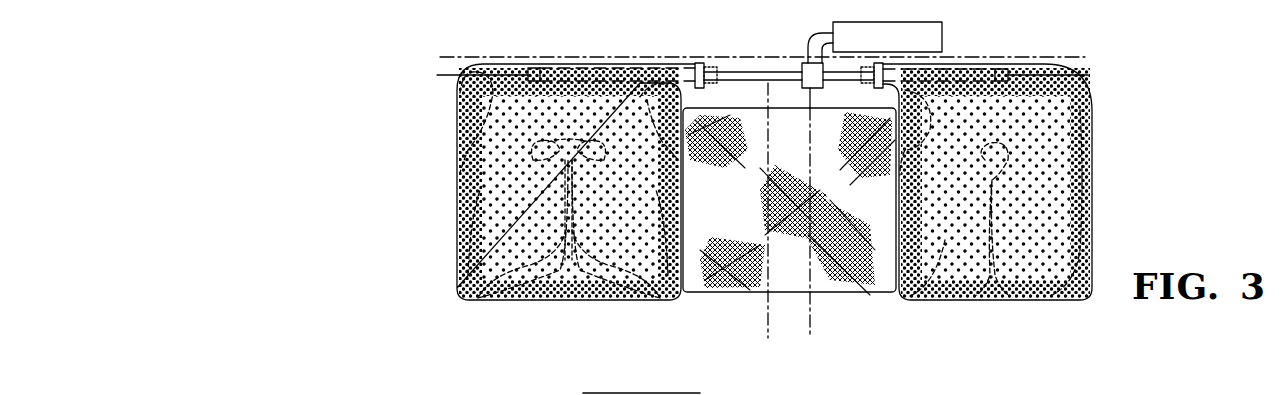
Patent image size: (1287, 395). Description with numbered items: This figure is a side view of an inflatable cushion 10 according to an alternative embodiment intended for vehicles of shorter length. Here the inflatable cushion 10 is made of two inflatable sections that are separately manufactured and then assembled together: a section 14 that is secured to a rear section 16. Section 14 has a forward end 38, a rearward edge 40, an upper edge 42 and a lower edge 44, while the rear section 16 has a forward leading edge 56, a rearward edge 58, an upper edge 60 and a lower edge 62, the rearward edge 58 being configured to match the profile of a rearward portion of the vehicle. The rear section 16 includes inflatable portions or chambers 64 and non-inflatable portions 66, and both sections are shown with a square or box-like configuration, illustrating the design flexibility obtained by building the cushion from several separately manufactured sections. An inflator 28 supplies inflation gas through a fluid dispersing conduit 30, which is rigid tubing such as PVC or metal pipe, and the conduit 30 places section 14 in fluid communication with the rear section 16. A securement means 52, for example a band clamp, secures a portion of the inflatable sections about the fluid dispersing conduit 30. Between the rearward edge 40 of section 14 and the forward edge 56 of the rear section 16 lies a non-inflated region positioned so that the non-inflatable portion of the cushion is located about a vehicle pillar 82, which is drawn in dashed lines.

The inflatable cushion 10 is at (1110, 394).
The second section 14 is at (462, 303).
The rear section 16 is at (1043, 306).
The inflator 28 is at (937, 43).
The fluid dispersing conduit 30 is at (748, 74).
The forward end 38 is at (455, 202).
The rearward edge 40 is at (692, 292).
The upper edge 42 is at (543, 63).
The lower edge 44 is at (560, 300).
The securement means 52 is at (698, 62).
The forward leading edge 56 is at (889, 291).
The rearward edge 58 is at (1092, 190).
The upper edge 60 is at (1060, 75).
The lower edge 62 is at (997, 300).
The inflatable portions or chambers 64 is at (1040, 127).
The non-inflatable portions 66 is at (1092, 270).
The pillar 82 is at (777, 300).